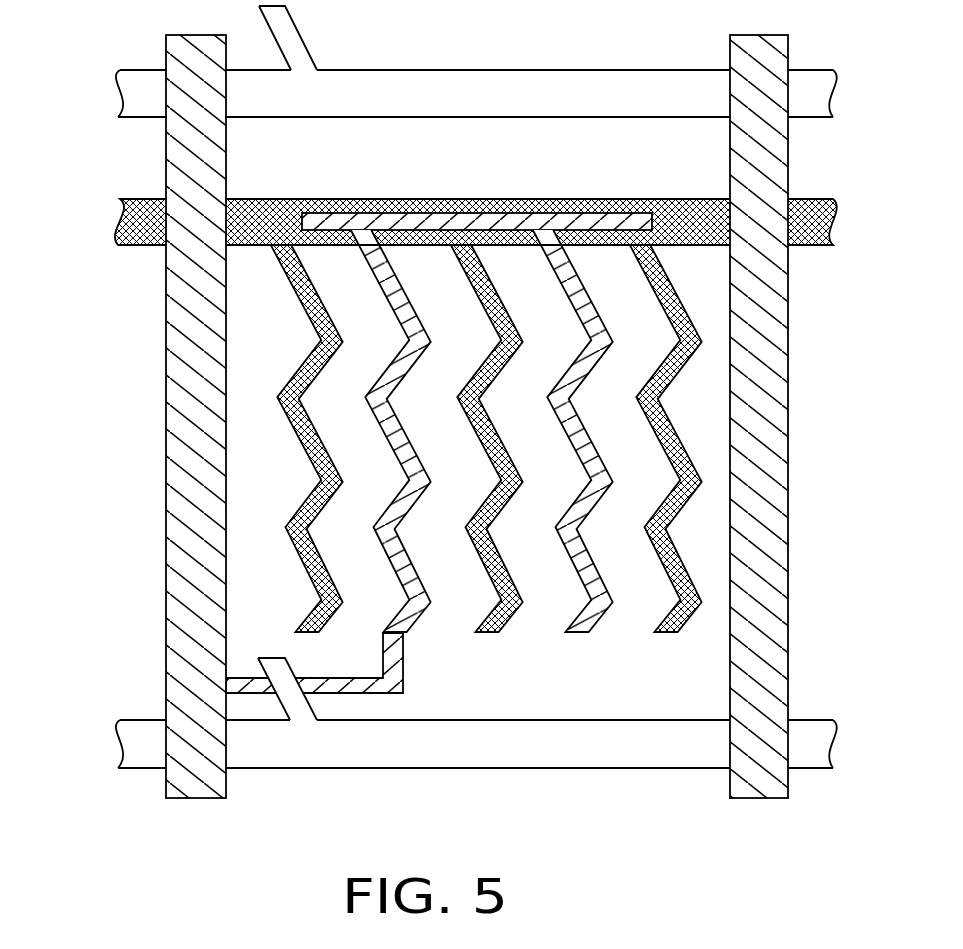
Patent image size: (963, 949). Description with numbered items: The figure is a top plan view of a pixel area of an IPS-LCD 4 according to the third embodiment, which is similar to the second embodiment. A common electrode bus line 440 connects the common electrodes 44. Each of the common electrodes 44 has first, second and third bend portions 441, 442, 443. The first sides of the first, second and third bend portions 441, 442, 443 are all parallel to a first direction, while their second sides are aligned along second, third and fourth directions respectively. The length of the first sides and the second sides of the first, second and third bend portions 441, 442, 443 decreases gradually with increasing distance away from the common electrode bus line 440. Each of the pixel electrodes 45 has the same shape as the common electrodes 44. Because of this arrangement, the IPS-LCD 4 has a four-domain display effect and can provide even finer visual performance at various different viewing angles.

The IPS-LCD 4 is at (482, 43).
The common electrodes 44 is at (363, 438).
The common electrode bus line 440 is at (265, 199).
The first bend portion 441 is at (305, 368).
The second bend portion 442 is at (305, 505).
The third bend portion 443 is at (80, 306).
The pixel electrodes 45 is at (413, 613).